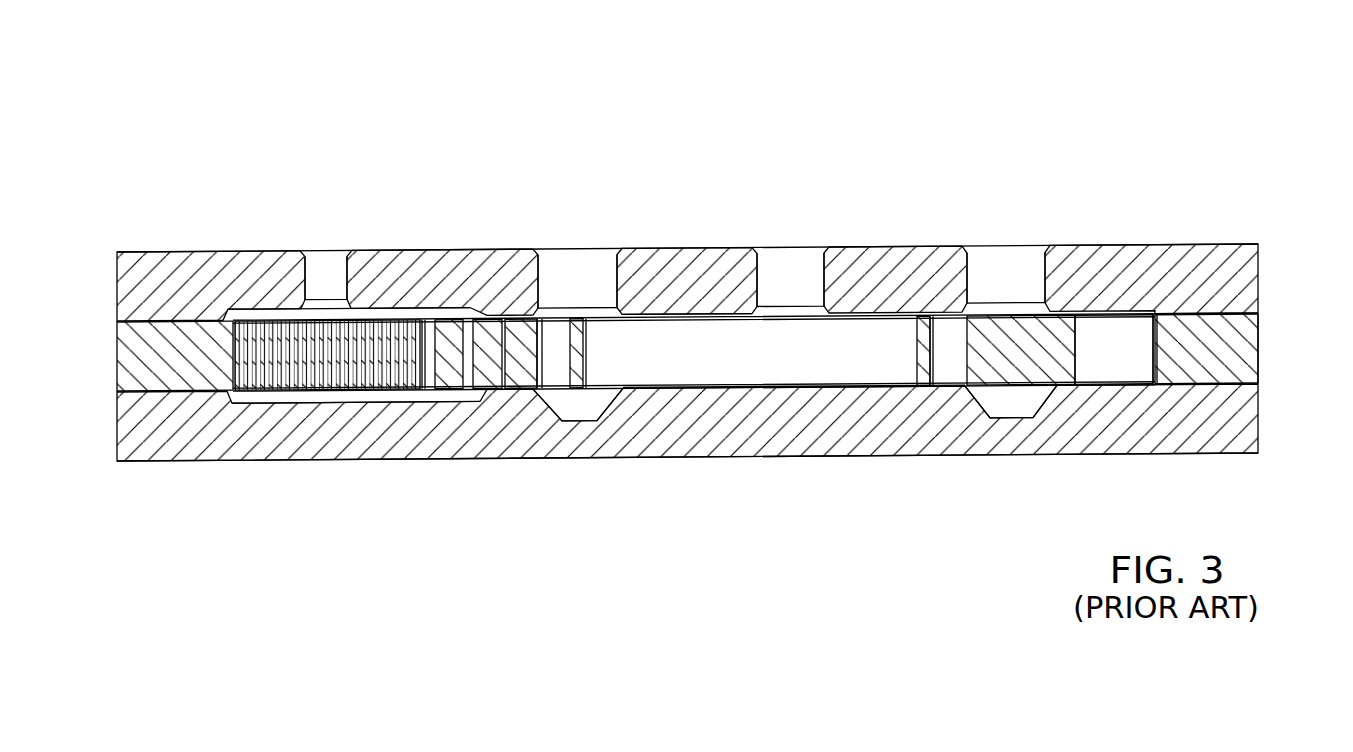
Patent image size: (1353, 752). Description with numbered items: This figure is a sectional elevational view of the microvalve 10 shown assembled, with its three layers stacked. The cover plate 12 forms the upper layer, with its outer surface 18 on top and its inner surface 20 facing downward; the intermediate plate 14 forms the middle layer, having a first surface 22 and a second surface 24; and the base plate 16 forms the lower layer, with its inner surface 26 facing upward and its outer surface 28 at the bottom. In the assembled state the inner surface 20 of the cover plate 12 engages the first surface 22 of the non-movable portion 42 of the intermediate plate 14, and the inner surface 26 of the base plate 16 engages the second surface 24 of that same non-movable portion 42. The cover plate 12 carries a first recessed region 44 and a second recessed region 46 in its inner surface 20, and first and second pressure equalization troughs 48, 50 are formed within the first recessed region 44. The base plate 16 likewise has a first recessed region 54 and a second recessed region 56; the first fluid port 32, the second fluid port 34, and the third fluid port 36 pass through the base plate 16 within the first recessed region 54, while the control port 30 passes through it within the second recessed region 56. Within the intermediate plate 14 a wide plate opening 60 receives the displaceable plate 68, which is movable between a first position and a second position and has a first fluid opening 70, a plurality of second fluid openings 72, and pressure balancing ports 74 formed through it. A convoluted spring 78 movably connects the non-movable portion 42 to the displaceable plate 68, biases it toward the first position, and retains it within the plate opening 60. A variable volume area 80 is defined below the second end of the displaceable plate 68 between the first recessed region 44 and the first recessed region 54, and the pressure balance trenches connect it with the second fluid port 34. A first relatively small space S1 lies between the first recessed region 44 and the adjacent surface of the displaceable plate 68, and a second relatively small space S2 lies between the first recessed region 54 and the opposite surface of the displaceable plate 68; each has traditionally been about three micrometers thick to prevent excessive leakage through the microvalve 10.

The microvalve 10 is at (218, 72).
The cover plate 12 is at (120, 422).
The intermediate plate 14 is at (120, 353).
The base plate 16 is at (120, 285).
The outer surface 18 is at (130, 461).
The inner surface 20 is at (1258, 367).
The first surface 22 is at (120, 393).
The second surface 24 is at (1247, 305).
The inner surface 26 is at (120, 324).
The outer surface 28 is at (1258, 246).
The control port 30 is at (312, 274).
The first fluid port 32 is at (965, 268).
The second fluid port 34 is at (758, 272).
The third fluid port 36 is at (538, 278).
The non-movable portion 42 is at (1190, 360).
The first recessed region 44 is at (712, 385).
The second recessed region 46 is at (306, 398).
The first pressure equalization trough 48 is at (988, 414).
The second pressure equalization trough 50 is at (562, 421).
The first recessed region 54 is at (658, 320).
The second recessed region 56 is at (250, 310).
The plate opening 60 is at (1155, 352).
The displaceable plate 68 is at (1066, 325).
The first fluid opening 70 is at (585, 352).
The second fluid openings 72 is at (537, 353).
The pressure balancing ports 74 is at (473, 388).
The convoluted spring 78 is at (258, 385).
The variable volume area 80 is at (1100, 358).
The first relatively small space S1 is at (768, 387).
The second relatively small space S2 is at (698, 318).